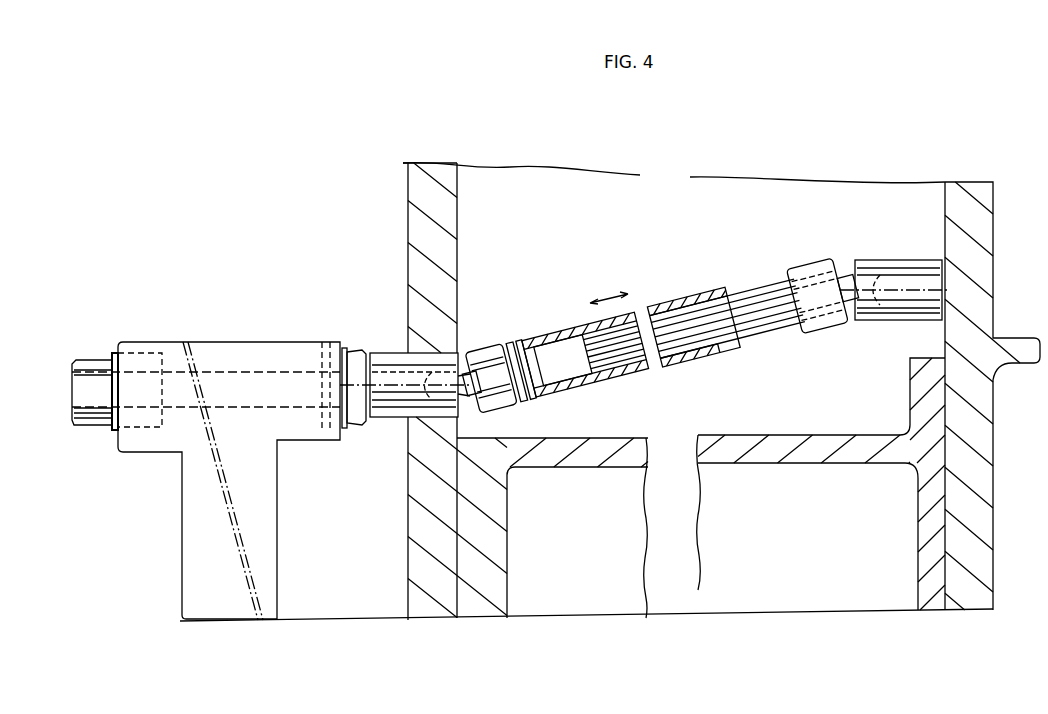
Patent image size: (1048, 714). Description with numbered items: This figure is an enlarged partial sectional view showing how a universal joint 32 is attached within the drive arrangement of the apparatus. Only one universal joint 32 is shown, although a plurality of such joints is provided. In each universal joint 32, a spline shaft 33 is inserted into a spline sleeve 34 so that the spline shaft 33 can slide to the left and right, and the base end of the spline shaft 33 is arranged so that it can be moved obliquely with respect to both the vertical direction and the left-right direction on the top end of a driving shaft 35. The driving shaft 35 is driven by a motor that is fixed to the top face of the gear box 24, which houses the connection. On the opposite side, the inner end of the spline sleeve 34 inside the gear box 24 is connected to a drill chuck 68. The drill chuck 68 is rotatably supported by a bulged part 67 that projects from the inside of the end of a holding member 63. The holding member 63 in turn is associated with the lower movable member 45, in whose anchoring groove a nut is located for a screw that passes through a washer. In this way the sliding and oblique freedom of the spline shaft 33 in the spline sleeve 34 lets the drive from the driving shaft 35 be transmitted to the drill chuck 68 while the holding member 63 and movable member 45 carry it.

The gear box 24 is at (818, 186).
The universal joint 32 is at (687, 303).
The spline shaft 33 is at (753, 306).
The spline sleeve 34 is at (564, 336).
The driving shaft 35 is at (906, 265).
The lower movable member 45 is at (344, 609).
The holding member 63 is at (254, 350).
The bulged part 67 is at (179, 344).
The drill chuck 68 is at (94, 361).